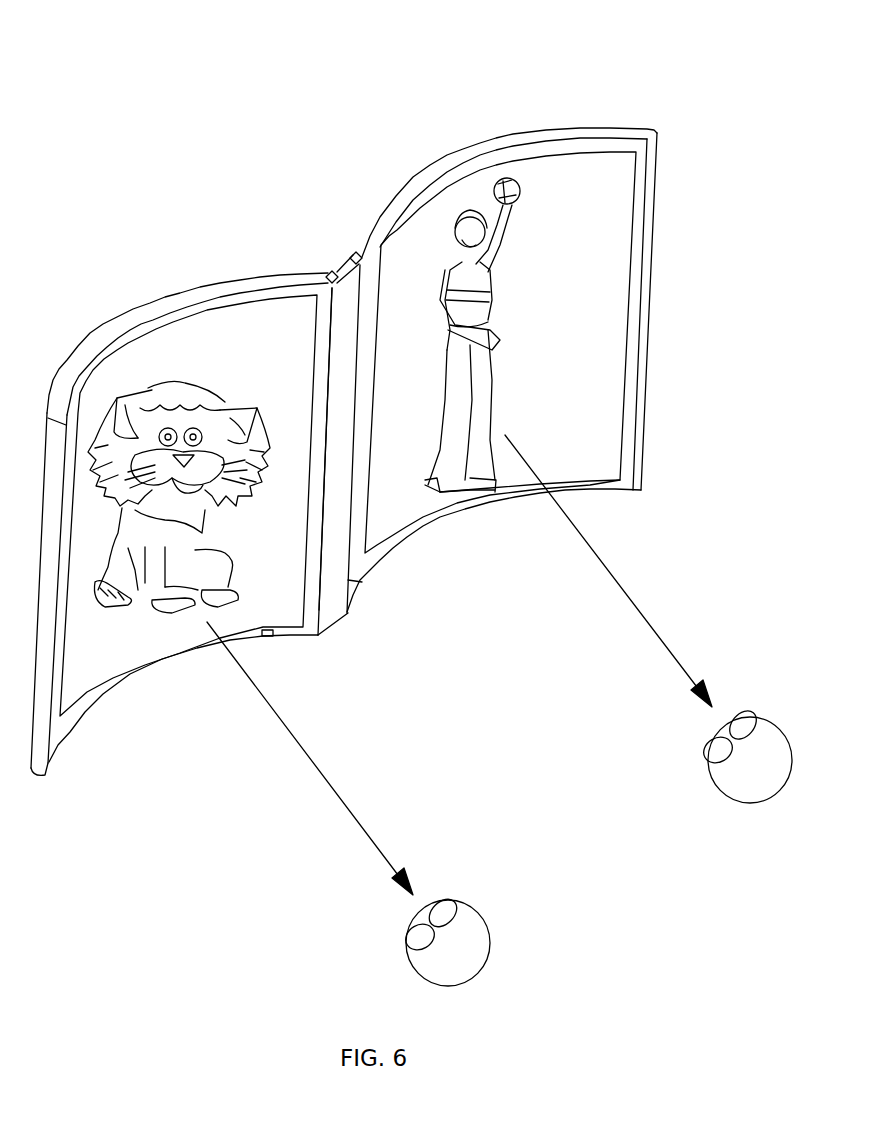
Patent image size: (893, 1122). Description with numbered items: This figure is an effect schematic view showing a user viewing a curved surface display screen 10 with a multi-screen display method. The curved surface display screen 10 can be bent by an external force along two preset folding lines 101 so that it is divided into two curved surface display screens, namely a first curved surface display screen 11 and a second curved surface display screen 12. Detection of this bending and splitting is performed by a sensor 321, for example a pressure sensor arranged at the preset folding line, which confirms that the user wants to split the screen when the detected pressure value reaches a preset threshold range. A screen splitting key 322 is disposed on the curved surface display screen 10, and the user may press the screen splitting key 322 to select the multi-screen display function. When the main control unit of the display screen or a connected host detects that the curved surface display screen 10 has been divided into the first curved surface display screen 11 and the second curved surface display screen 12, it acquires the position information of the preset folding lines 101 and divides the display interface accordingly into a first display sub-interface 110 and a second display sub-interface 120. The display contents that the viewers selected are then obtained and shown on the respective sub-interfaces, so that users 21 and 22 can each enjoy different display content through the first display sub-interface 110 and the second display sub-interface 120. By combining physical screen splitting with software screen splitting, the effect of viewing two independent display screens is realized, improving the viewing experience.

The curved surface display screen 10 is at (443, 54).
The first curved surface display screen 11 is at (532, 335).
The second curved surface display screen 12 is at (189, 520).
The preset folding lines 101 is at (406, 531).
The first display sub-interface 110 is at (541, 374).
The second display sub-interface 120 is at (188, 558).
The user 21 is at (648, 674).
The user 22 is at (403, 804).
The sensor 321 is at (243, 142).
The screen splitting key 322 is at (372, 736).